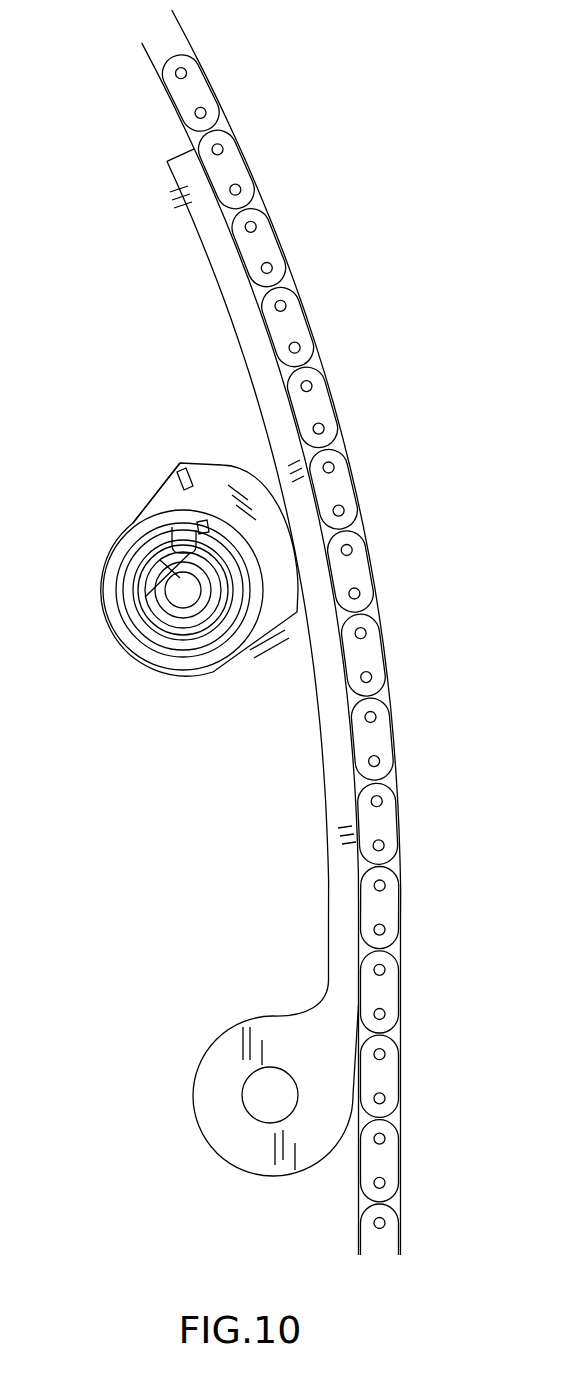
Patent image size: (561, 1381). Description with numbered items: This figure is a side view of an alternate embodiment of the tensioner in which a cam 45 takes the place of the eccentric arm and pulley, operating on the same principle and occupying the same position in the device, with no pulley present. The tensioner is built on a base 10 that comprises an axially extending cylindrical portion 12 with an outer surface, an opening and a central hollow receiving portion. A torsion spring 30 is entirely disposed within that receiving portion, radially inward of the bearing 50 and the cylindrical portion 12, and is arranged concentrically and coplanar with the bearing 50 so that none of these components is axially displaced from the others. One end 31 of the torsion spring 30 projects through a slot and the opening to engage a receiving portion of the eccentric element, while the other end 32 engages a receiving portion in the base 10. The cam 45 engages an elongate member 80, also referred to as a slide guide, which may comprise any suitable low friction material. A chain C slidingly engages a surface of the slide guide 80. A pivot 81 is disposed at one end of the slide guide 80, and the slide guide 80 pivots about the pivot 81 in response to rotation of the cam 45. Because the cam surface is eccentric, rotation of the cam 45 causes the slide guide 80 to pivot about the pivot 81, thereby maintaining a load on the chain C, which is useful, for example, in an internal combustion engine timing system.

The chain C is at (405, 1000).
The elongate member 80 is at (327, 933).
The pivot 81 is at (272, 1095).
The base 10 is at (175, 658).
The bearing 50 is at (150, 527).
The cylindrical portion 12 is at (125, 608).
The torsion spring 30 is at (212, 620).
The end 32 is at (162, 573).
The end 31 is at (178, 466).
The cam 45 is at (157, 485).